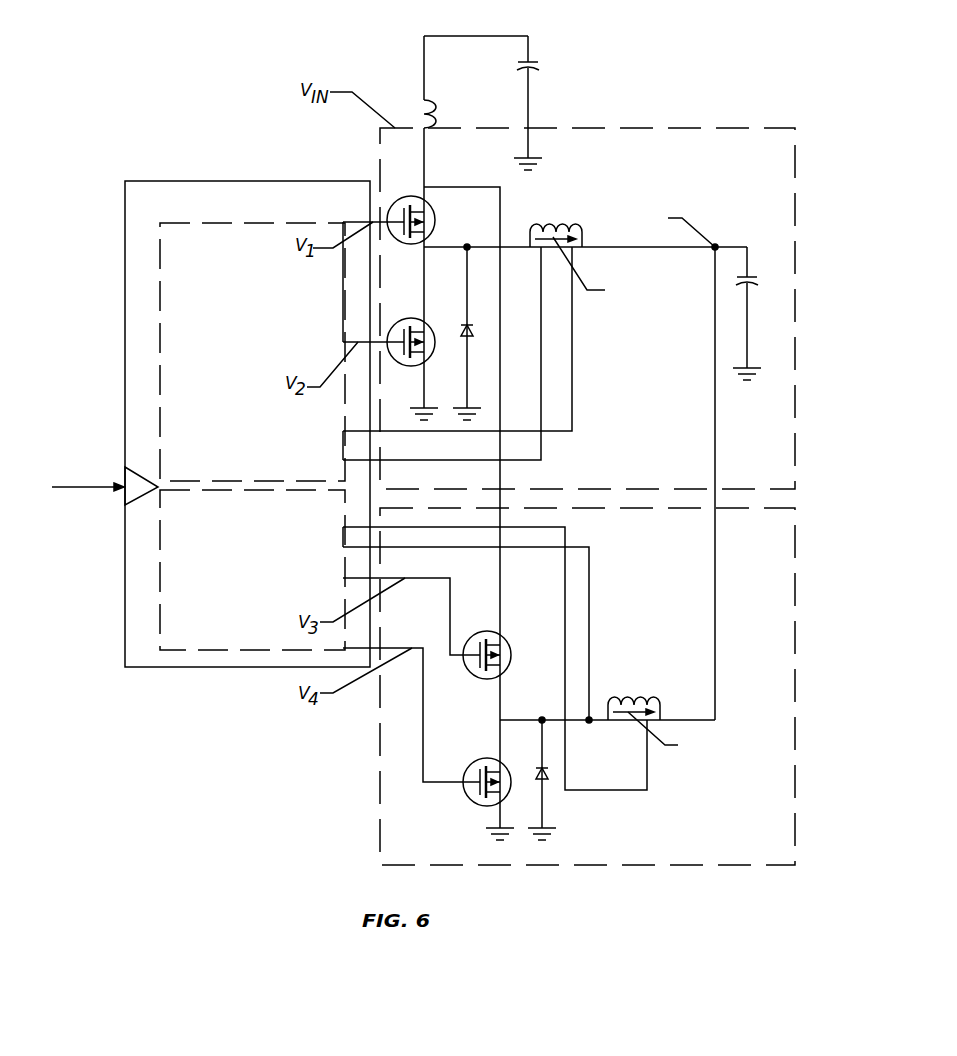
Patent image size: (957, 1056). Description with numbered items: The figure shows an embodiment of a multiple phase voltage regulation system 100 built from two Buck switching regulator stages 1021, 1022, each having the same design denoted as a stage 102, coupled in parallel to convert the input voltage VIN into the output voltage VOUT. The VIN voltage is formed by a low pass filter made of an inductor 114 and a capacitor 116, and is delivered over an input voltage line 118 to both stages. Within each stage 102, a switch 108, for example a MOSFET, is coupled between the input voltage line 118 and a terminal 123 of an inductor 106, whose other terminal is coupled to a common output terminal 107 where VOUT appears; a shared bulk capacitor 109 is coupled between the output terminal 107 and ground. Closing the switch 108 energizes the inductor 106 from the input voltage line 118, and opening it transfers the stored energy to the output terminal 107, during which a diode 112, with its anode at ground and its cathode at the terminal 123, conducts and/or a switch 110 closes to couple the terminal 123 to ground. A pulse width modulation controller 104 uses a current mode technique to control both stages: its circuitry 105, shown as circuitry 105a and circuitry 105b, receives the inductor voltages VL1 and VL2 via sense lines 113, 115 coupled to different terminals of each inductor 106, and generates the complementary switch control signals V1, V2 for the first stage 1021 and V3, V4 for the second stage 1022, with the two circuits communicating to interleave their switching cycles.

The multiple phase voltage regulation system 100 is at (815, 430).
The regulator stage 102 is at (637, 496).
The first regulator stage 1021 is at (637, 308).
The second regulator stage 1022 is at (635, 686).
The pulse width modulation controller 104 is at (205, 424).
The circuitry 105 is at (190, 491).
The circuitry for first stage 105a is at (190, 352).
The circuitry for second stage 105b is at (239, 625).
The inductor 106 is at (620, 467).
The output terminal 107 is at (713, 456).
The switch 108 is at (414, 489).
The bulk capacitor 109 is at (802, 297).
The switch 110 is at (394, 559).
The diode 112 is at (548, 543).
The sense line 113 is at (511, 485).
The inductor 114 is at (428, 82).
The sense line 115 is at (510, 518).
The capacitor 116 is at (489, 88).
The input voltage line 118 is at (520, 144).
The inductor terminal 123 is at (585, 445).